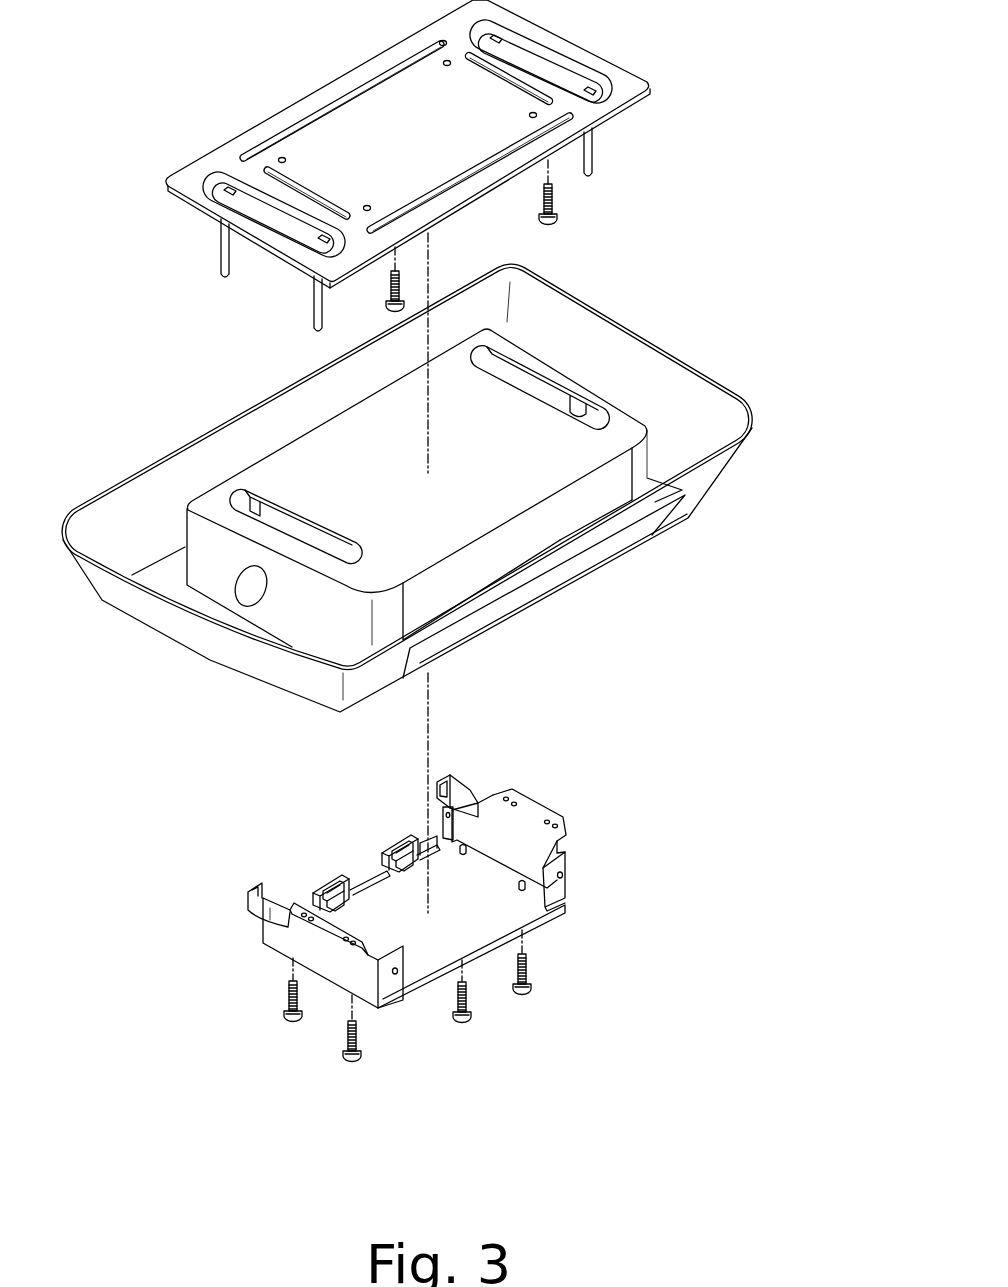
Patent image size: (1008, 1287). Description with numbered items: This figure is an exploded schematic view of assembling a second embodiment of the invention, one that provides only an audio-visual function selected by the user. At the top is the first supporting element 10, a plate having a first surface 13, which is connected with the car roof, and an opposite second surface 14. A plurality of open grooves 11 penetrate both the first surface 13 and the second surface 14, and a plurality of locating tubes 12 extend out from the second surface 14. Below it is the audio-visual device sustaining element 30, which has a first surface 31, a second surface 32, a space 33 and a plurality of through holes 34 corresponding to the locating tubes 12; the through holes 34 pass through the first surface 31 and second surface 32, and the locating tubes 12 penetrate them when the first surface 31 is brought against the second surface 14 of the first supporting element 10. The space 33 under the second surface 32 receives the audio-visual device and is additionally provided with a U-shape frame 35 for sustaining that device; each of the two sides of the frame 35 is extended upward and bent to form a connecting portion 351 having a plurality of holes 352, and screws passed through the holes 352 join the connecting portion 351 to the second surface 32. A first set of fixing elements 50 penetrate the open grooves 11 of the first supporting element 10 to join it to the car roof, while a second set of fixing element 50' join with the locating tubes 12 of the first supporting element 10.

The first supporting element 10 is at (660, 50).
The open grooves 11 is at (365, 88).
The locating tubes 12 is at (594, 177).
The first surface 13 is at (630, 92).
The second surface 14 is at (622, 115).
The first set of fixing elements 50 is at (496, 536).
The audio-visual device sustaining element 30 is at (762, 403).
The first surface 31 is at (622, 428).
The second surface 32 is at (565, 492).
The space 33 is at (473, 583).
The through holes 34 is at (318, 537).
The U-shape frame 35 is at (565, 852).
The connecting portion 351 is at (542, 803).
The holes 352 is at (508, 792).
The second set of fixing element 50' is at (442, 996).